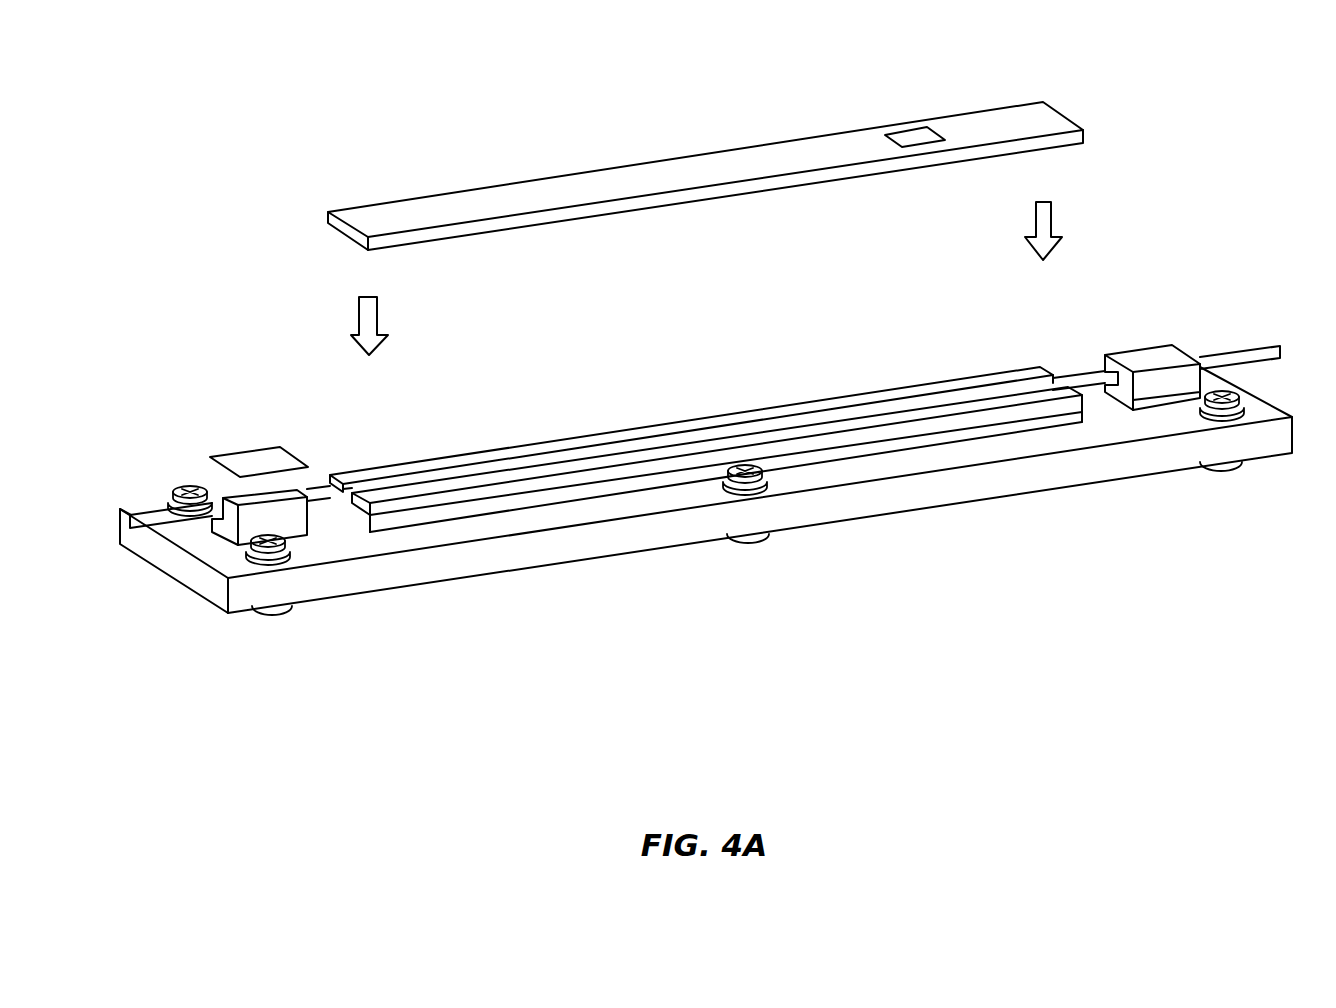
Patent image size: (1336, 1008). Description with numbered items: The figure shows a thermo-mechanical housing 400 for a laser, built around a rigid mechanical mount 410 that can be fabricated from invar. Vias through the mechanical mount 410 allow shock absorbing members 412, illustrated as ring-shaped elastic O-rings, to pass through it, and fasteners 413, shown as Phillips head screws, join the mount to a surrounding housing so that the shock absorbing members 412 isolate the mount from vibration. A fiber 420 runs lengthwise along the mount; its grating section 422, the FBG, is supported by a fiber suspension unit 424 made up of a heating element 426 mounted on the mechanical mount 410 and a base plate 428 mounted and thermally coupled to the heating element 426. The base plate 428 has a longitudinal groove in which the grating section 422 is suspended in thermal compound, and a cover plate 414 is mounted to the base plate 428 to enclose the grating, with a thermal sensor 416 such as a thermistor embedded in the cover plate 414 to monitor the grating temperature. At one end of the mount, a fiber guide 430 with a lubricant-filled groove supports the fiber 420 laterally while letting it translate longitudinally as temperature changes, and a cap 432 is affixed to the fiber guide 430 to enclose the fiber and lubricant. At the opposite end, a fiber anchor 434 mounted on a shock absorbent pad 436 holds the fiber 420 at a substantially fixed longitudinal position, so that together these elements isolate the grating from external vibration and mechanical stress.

The thermo-mechanical housing 400 is at (377, 137).
The mechanical mount 410 is at (857, 522).
The shock absorbing members 412 is at (272, 617).
The fasteners 413 is at (175, 490).
The cover plate 414 is at (767, 157).
The thermal sensor 416 is at (910, 128).
The fiber 420 is at (1235, 348).
The grating section 422 is at (987, 308).
The fiber suspension unit 424 is at (503, 528).
The heating element 426 is at (1010, 430).
The base plate 428 is at (958, 387).
The fiber guide 430 is at (310, 523).
The cap 432 is at (263, 453).
The fiber anchor 434 is at (1133, 362).
The shock absorbent pad 436 is at (1158, 403).